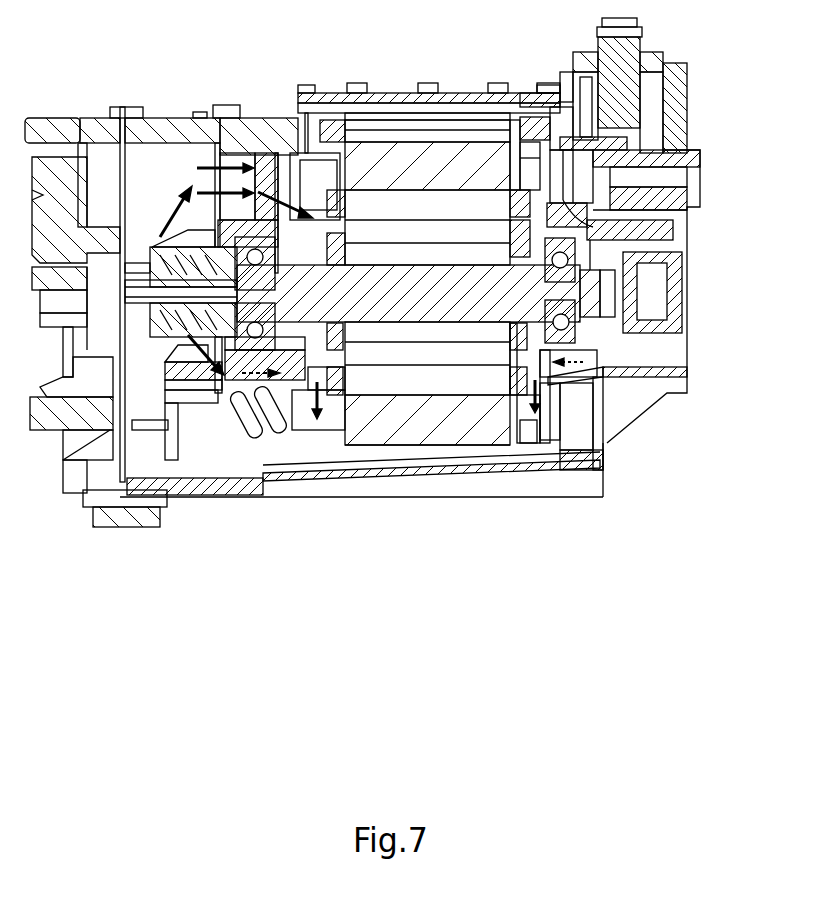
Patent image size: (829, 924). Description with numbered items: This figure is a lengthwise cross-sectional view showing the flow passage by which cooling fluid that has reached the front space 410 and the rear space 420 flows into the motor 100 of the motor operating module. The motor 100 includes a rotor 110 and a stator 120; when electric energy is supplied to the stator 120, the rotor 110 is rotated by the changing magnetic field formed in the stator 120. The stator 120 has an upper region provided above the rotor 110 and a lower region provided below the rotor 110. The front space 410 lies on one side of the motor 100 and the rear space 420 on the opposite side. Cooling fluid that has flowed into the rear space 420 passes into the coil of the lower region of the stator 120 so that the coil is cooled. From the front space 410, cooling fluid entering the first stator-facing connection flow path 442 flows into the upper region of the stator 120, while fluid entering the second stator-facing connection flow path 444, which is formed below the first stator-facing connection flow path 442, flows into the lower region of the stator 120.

The motor 100 is at (537, 597).
The rotor 110 is at (473, 305).
The stator 120 is at (457, 425).
The front space 410 is at (335, 418).
The rear space 420 is at (637, 340).
The first stator-facing connection flow path 442 is at (262, 145).
The second stator-facing connection flow path 444 is at (222, 393).